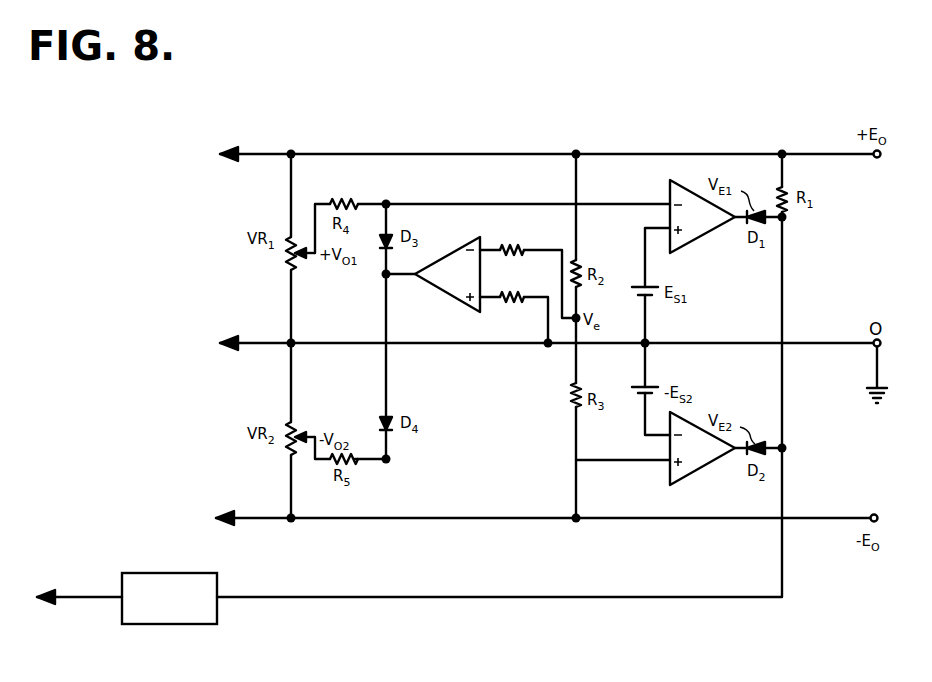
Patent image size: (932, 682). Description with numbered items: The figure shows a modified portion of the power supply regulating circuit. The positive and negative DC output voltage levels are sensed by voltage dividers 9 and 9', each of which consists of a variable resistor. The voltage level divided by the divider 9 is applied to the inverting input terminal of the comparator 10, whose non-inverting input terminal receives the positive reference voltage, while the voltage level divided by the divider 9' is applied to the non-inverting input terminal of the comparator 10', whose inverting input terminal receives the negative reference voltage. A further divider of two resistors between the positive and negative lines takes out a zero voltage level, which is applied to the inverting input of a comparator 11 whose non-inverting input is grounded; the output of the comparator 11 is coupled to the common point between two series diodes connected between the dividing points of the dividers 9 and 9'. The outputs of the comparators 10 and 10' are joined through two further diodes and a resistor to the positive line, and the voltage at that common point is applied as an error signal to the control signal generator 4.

The voltage divider 9 is at (308, 265).
The voltage divider 9' is at (309, 427).
The comparator 11 is at (444, 296).
The voltage comparator 10 is at (702, 221).
The comparator 10' is at (702, 453).
The control signal generator 4 is at (163, 624).